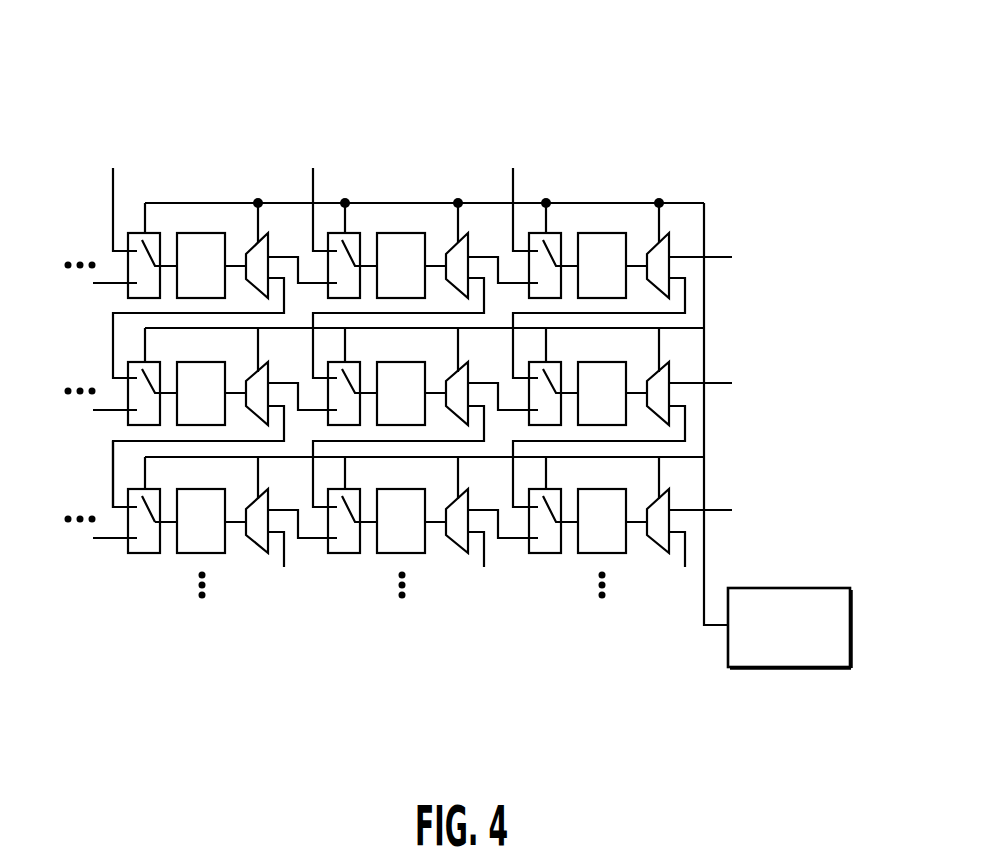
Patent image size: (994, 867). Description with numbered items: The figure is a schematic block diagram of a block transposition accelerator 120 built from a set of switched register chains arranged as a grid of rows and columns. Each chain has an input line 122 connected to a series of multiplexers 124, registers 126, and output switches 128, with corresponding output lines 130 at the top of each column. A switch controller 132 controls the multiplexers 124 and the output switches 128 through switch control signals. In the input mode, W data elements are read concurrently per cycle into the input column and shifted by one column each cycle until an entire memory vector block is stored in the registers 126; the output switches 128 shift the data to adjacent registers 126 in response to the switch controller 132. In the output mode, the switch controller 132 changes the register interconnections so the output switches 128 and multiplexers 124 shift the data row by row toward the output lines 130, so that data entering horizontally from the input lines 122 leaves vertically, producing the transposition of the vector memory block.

The block transposition accelerator 120 is at (236, 80).
The input line 122 is at (725, 254).
The multiplexer 124 is at (267, 553).
The register 126 is at (218, 553).
The output switch 128 is at (145, 553).
The output line 130 is at (515, 188).
The switch controller 132 is at (728, 658).